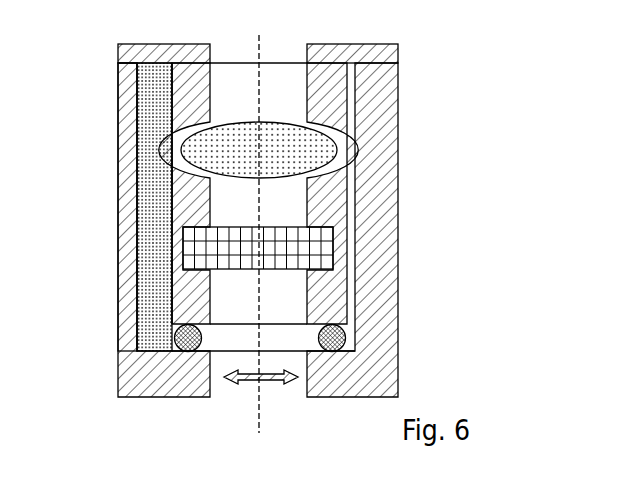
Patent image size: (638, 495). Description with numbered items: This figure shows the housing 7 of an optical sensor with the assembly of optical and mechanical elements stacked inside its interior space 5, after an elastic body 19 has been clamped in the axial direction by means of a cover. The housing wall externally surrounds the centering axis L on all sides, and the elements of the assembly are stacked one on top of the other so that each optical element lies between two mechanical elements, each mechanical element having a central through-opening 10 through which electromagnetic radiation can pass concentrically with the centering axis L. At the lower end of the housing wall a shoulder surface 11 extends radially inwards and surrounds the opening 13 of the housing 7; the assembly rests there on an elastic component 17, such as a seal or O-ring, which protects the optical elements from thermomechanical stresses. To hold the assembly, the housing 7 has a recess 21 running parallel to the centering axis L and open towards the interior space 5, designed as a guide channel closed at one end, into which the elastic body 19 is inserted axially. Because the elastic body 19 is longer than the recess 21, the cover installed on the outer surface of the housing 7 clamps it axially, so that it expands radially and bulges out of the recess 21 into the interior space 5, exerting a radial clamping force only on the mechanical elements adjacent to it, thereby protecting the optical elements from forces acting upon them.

The interior space 5 is at (178, 253).
The housing 7 is at (362, 113).
The through-opening 10 is at (296, 105).
The shoulder surface 11 is at (176, 345).
The opening 13 is at (255, 375).
The elastic component 17 is at (347, 335).
The elastic body 19 is at (153, 160).
The recess 21 is at (142, 277).
The centering axis L is at (262, 57).